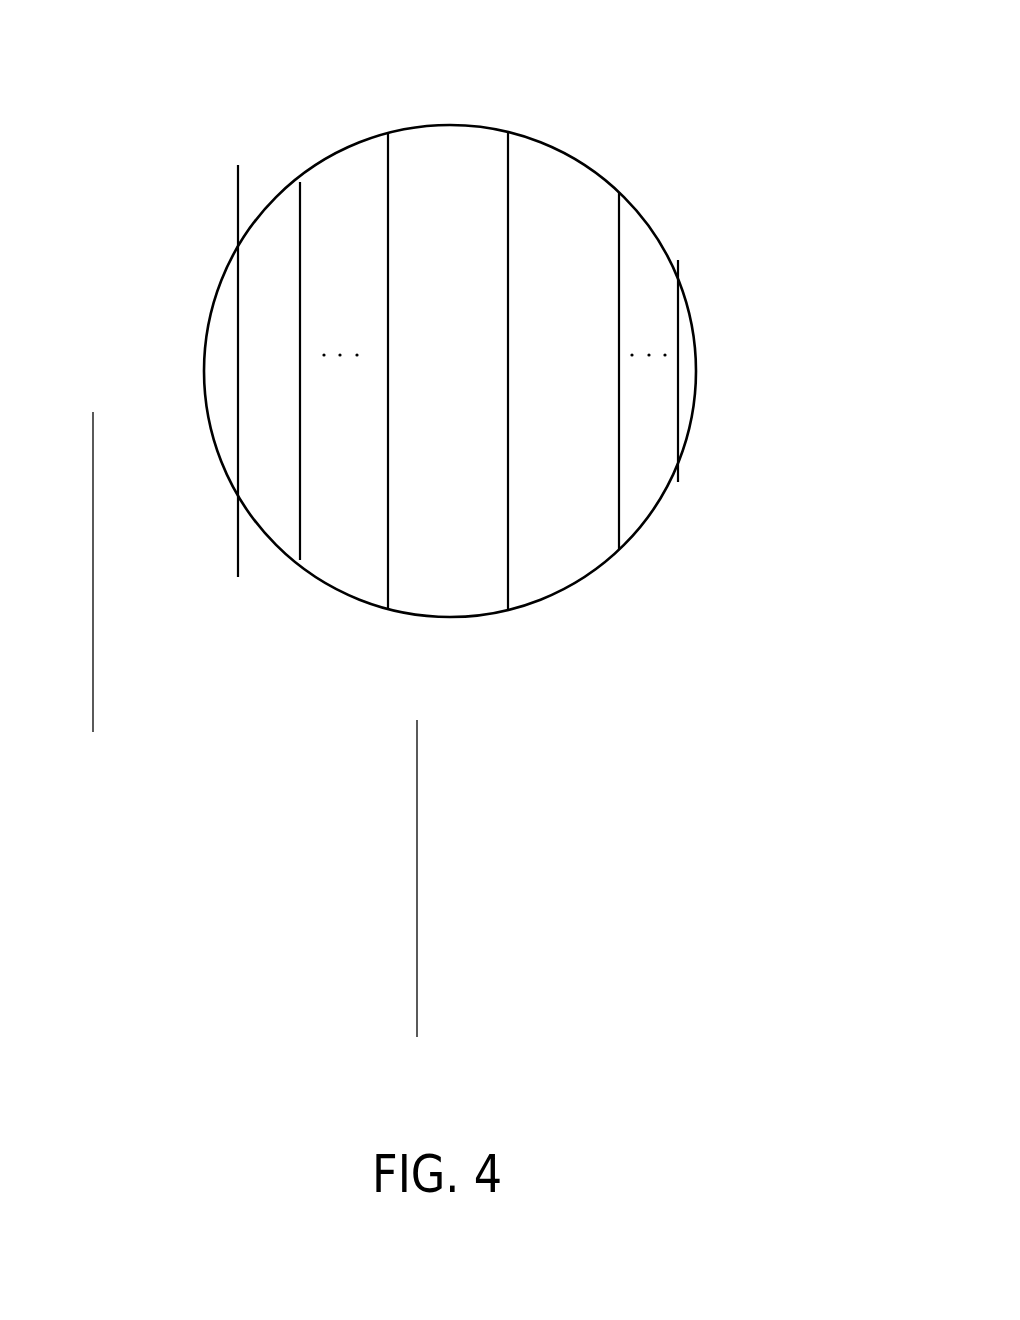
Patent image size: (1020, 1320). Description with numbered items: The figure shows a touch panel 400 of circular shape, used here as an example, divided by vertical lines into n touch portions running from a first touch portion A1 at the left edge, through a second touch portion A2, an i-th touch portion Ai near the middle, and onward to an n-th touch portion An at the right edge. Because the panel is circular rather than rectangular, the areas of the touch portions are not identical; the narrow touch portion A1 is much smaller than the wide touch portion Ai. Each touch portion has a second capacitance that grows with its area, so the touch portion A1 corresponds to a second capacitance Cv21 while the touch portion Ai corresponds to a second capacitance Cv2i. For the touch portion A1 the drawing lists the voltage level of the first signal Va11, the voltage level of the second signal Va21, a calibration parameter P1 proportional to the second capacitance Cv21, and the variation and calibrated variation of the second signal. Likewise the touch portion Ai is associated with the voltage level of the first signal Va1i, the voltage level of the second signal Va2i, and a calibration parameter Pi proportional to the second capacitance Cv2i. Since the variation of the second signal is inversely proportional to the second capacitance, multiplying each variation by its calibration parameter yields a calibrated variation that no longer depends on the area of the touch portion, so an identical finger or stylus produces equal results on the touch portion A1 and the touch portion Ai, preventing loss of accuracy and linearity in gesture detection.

The touch panel 400 is at (687, 94).
The touch portion A1 is at (218, 372).
The touch portion A2 is at (270, 505).
The touch portion Ai is at (445, 587).
The touch portion An is at (688, 352).
The second capacitance Cv21 is at (93, 465).
The voltage level of the first signal Va11 is at (93, 518).
The voltage level of the second signal Va21 is at (93, 572).
The calibration parameter P1 is at (93, 625).
The second capacitance Cv2i is at (417, 770).
The voltage level of the first signal Va1i is at (417, 823).
The voltage level of the second signal Va2i is at (417, 877).
The calibration parameter Pi is at (417, 930).